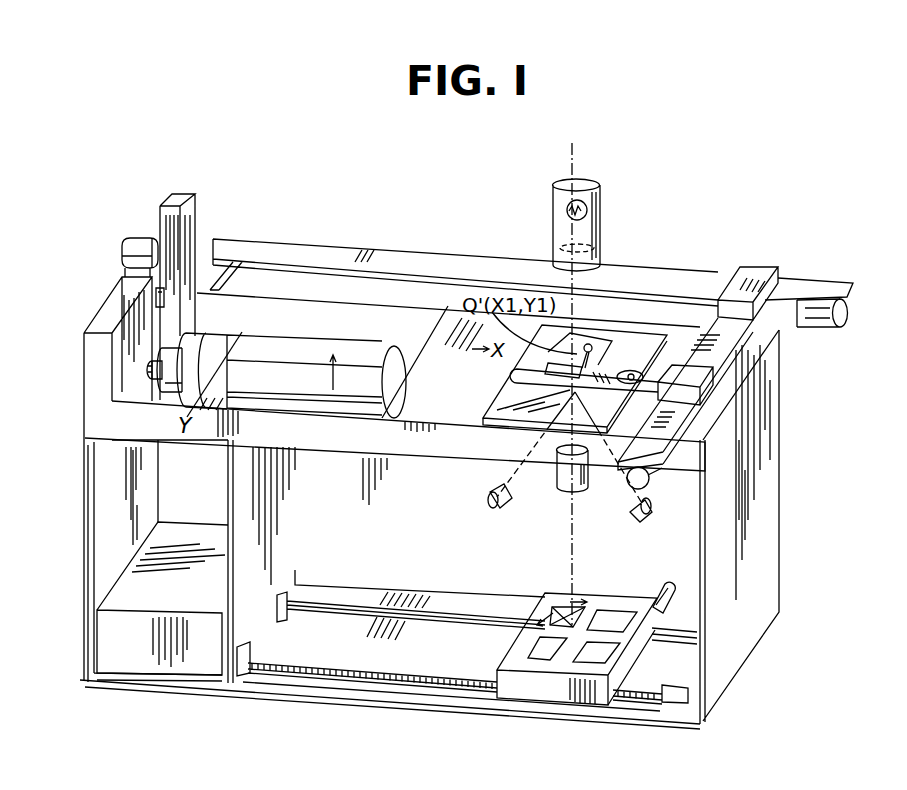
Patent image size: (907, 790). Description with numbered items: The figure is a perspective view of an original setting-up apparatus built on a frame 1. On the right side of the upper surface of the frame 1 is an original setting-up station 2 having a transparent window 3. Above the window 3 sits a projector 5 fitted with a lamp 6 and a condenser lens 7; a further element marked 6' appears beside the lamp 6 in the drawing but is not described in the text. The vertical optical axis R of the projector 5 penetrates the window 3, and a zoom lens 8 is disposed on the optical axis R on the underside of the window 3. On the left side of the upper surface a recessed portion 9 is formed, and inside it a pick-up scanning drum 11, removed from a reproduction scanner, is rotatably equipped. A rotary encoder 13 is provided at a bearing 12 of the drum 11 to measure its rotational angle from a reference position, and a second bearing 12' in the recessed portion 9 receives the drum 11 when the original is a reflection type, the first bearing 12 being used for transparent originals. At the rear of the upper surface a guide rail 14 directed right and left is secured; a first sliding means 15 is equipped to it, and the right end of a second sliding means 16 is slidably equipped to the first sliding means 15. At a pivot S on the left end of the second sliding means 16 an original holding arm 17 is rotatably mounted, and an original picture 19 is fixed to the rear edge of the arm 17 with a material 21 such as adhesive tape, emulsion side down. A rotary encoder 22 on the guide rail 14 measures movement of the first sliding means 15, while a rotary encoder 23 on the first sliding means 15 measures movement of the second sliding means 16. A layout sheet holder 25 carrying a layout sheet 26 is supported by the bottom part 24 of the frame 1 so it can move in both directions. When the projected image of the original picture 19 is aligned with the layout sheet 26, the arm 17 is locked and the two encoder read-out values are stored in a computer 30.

The frame 1 is at (764, 573).
The original setting-up station 2 is at (717, 417).
The transparent window 3 is at (508, 420).
The projector 5 is at (553, 190).
The lamp 6 is at (600, 206).
The auxiliary lamps 6' is at (548, 522).
The condenser lens 7 is at (600, 249).
The zoom lens 8 is at (560, 476).
The recessed portion 9 is at (316, 302).
The pick-up scanning drum 11 is at (296, 401).
The bearing 12 is at (103, 370).
The second bearing 12' is at (112, 297).
The rotary encoder 13 is at (133, 252).
The guide rail 14 is at (726, 277).
The first sliding means 15 is at (712, 346).
The second sliding means 16 is at (662, 380).
The original holding arm 17 is at (518, 373).
The original picture 19 is at (590, 345).
The material 21 is at (510, 393).
The rotary encoder 22 is at (856, 310).
The rotary encoder 23 is at (645, 487).
The bottom part 24 is at (352, 690).
The layout sheet holder 25 is at (530, 673).
The layout sheet 26 is at (612, 683).
The computer 30 is at (147, 673).
The pivot S is at (634, 373).
The optical axis R is at (571, 546).